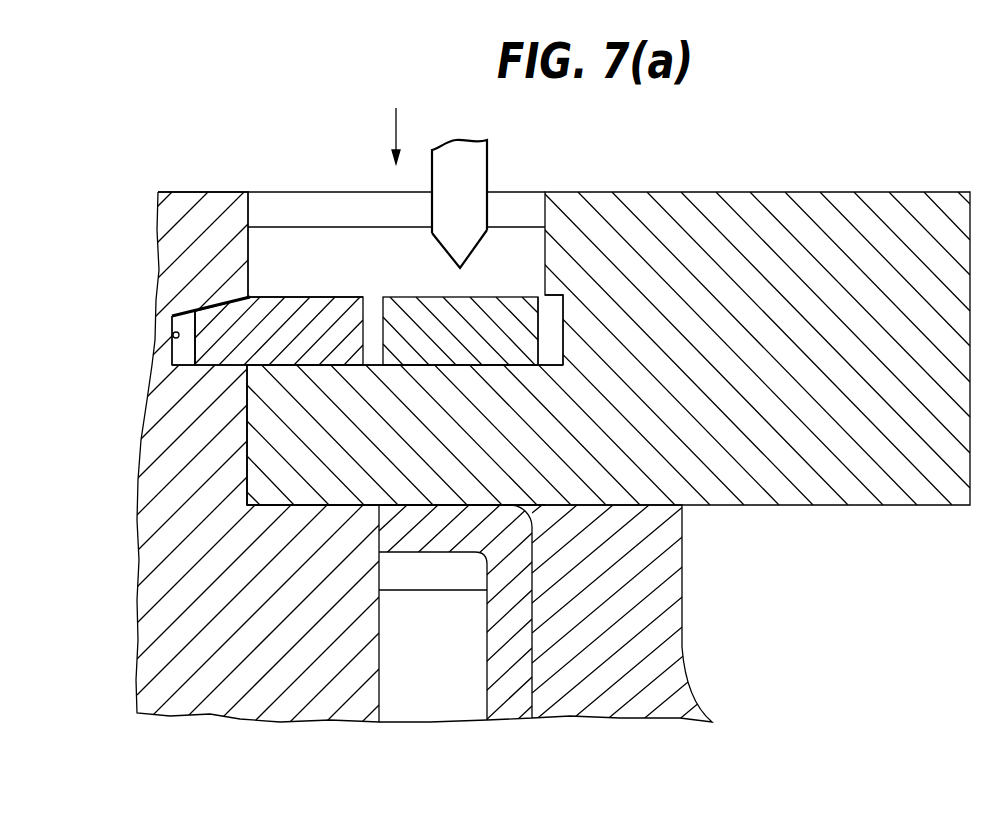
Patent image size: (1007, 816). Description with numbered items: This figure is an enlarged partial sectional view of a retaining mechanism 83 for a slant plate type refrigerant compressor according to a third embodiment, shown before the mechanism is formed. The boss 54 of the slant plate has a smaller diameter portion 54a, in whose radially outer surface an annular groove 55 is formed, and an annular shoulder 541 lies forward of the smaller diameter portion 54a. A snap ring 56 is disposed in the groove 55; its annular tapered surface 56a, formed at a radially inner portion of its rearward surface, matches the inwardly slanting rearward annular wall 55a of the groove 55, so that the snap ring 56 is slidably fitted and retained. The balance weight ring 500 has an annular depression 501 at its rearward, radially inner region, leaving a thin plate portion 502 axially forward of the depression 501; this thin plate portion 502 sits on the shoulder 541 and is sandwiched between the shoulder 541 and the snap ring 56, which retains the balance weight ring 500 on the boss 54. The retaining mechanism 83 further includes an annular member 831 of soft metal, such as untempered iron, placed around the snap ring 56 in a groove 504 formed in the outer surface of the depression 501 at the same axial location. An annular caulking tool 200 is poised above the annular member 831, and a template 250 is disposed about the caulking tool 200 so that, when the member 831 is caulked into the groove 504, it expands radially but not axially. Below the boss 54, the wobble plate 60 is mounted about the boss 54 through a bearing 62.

The annular depression 501 is at (352, 172).
The boss 54 is at (287, 705).
The smaller diameter portion 54a is at (186, 190).
The annular groove 55 is at (175, 335).
The rearward annular wall 55a is at (207, 300).
The snap ring 56 is at (322, 297).
The annular tapered surface 56a is at (258, 297).
The retaining mechanism 83 is at (412, 297).
The annular member 831 is at (478, 302).
The groove 504 is at (563, 297).
The balance weight ring 500 is at (902, 495).
The thin plate portion 502 is at (247, 470).
The annular shoulder 541 is at (340, 507).
The template 250 is at (515, 227).
The annular caulking tool 200 is at (487, 163).
The wobble plate 60 is at (647, 700).
The bearing 62 is at (450, 703).